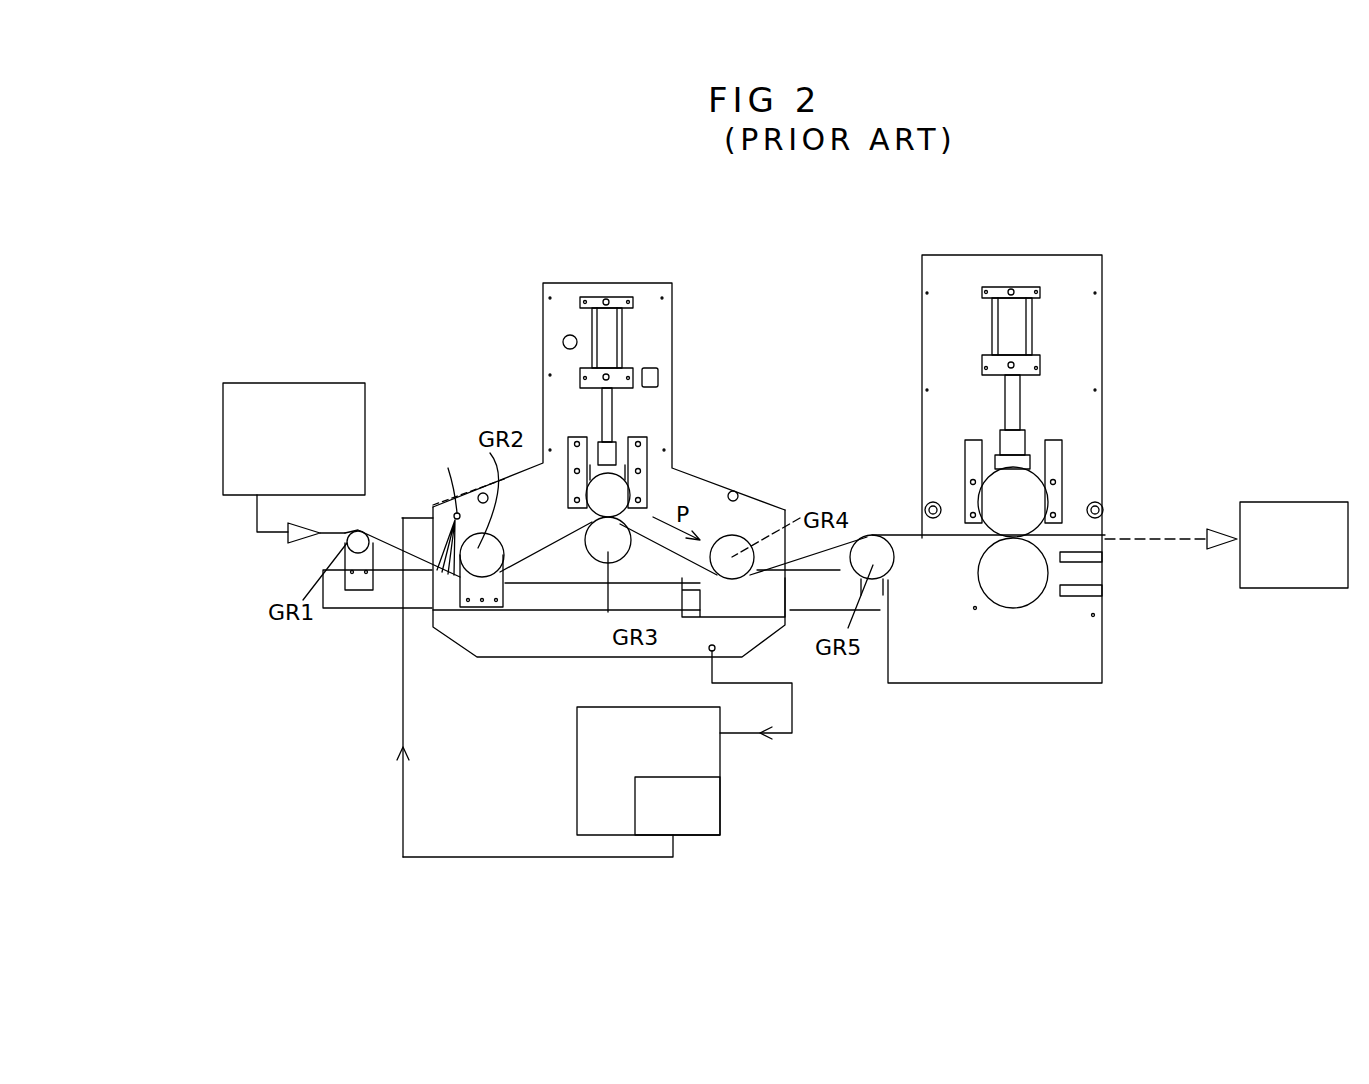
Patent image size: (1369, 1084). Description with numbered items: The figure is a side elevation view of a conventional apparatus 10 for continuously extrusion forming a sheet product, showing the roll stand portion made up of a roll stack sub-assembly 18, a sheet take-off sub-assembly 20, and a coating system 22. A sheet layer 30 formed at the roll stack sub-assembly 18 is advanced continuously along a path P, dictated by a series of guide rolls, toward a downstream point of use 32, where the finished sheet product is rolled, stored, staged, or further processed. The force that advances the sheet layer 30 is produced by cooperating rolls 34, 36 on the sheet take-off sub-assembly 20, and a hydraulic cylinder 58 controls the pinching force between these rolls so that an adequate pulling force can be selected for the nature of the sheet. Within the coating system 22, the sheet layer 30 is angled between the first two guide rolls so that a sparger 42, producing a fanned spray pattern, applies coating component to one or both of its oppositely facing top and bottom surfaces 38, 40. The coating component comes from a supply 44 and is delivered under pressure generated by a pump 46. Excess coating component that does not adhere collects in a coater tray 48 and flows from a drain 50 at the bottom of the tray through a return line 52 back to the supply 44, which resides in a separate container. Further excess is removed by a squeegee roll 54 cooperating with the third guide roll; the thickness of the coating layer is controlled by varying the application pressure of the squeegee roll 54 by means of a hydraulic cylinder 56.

The apparatus 10 is at (884, 228).
The roll stack sub-assembly 18 is at (296, 476).
The sheet take-off sub-assembly 20 is at (1042, 222).
The coating system 22 is at (698, 378).
The sheet layer 30 is at (837, 547).
The point of use 32 is at (1332, 586).
The cooperating roll 34 is at (1024, 518).
The cooperating roll 36 is at (1026, 590).
The top surface 38 is at (547, 565).
The bottom surface 40 is at (592, 544).
The sparger 42 is at (466, 512).
The supply 44 is at (608, 818).
The pump 46 is at (677, 834).
The coater tray 48 is at (545, 640).
The drain 50 is at (717, 657).
The return line 52 is at (795, 715).
The squeegee roll 54 is at (650, 468).
The hydraulic cylinder 56 is at (640, 334).
The hydraulic cylinder 58 is at (1040, 372).